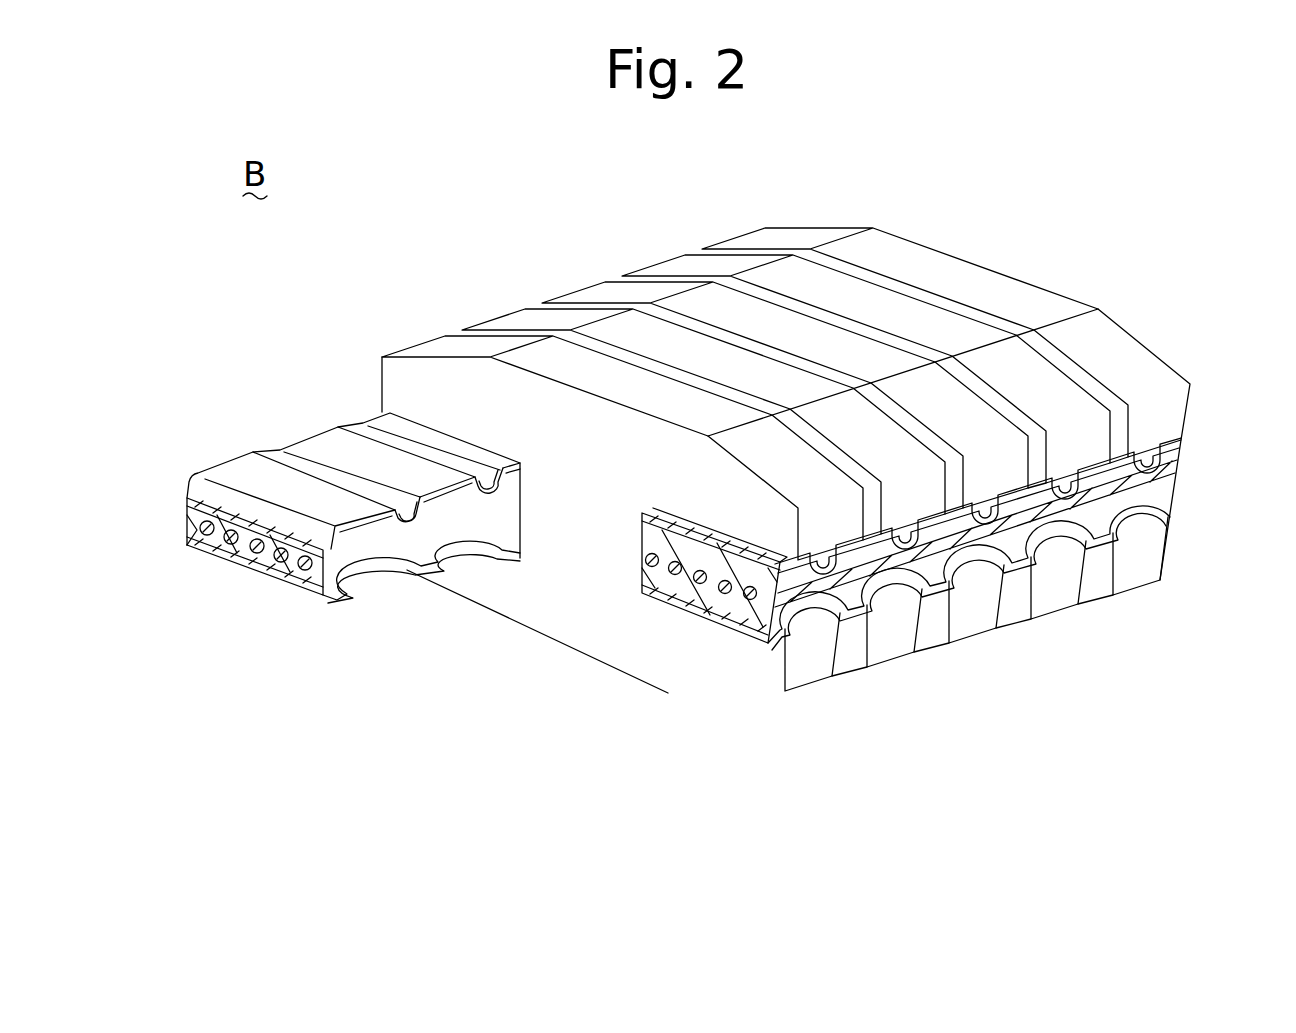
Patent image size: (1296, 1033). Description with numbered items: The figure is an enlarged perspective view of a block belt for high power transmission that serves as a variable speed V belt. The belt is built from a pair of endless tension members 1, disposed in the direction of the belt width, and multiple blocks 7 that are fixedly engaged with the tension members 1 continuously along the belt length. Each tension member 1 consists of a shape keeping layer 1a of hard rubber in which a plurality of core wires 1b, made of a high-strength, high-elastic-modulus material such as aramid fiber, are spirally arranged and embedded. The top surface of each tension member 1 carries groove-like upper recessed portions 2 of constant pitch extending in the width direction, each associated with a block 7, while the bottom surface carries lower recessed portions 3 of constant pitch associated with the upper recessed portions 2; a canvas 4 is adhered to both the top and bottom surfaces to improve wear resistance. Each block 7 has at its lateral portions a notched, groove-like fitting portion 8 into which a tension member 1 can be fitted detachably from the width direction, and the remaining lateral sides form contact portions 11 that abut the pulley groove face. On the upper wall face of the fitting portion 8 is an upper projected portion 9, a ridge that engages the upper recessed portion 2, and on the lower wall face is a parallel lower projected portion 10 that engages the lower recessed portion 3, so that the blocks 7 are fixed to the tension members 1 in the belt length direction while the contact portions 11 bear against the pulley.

The tension member 1 is at (290, 590).
The shape keeping layer 1a is at (207, 540).
The core wire 1b is at (285, 553).
The upper recessed portion 2 is at (355, 435).
The lower recessed portion 3 is at (403, 572).
The canvas 4 is at (186, 503).
The block 7 is at (893, 285).
The fitting portion 8 is at (490, 545).
The upper projected portion 9 is at (905, 545).
The lower projected portion 10 is at (970, 573).
The contact portion 11 is at (382, 397).